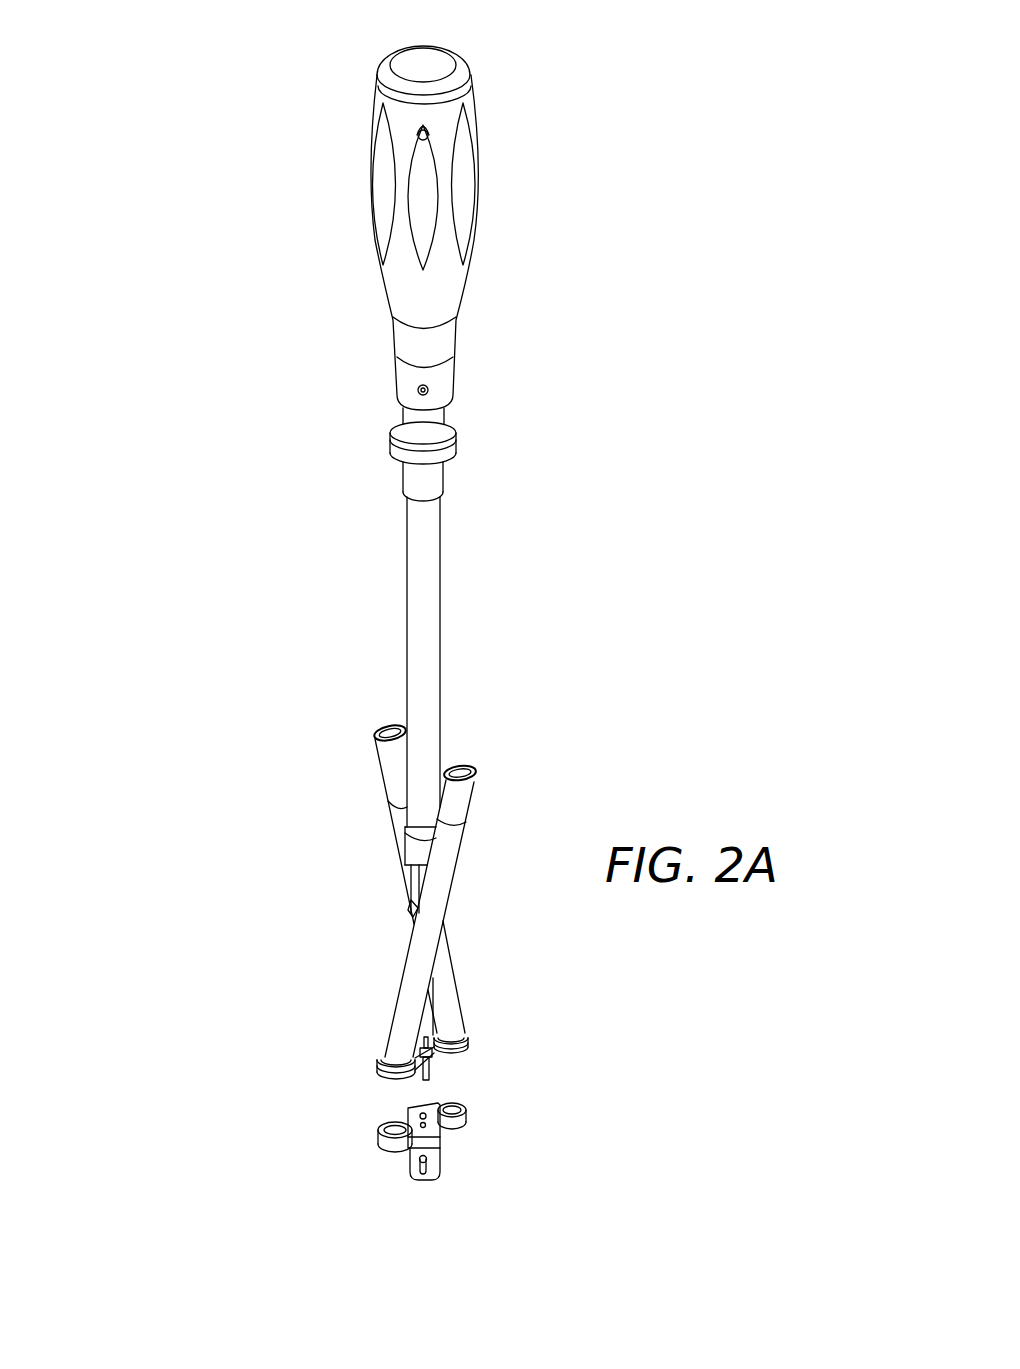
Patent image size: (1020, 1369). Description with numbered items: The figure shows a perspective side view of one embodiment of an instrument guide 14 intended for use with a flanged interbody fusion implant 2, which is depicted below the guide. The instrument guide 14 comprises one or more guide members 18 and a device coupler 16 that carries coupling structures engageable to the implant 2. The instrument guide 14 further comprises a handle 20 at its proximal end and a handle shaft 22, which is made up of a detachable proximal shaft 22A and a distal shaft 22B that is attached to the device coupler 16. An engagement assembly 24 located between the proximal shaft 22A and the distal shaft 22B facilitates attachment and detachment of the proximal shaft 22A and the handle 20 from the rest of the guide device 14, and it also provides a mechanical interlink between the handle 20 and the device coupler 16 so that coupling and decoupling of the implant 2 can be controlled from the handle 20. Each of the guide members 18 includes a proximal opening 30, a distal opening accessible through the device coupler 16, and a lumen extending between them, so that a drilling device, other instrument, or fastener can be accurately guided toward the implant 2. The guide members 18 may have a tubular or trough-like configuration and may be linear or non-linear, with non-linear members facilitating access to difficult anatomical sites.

The implant 2 is at (388, 1192).
The instrument guide 14 is at (147, 570).
The device coupler 16 is at (468, 1044).
The guide members 18 is at (397, 826).
The handle 20 is at (482, 217).
The handle shaft 22 is at (445, 726).
The proximal shaft 22A is at (415, 647).
The distal shaft 22B is at (434, 981).
The engagement assembly 24 is at (350, 912).
The proximal opening 30 is at (376, 730).